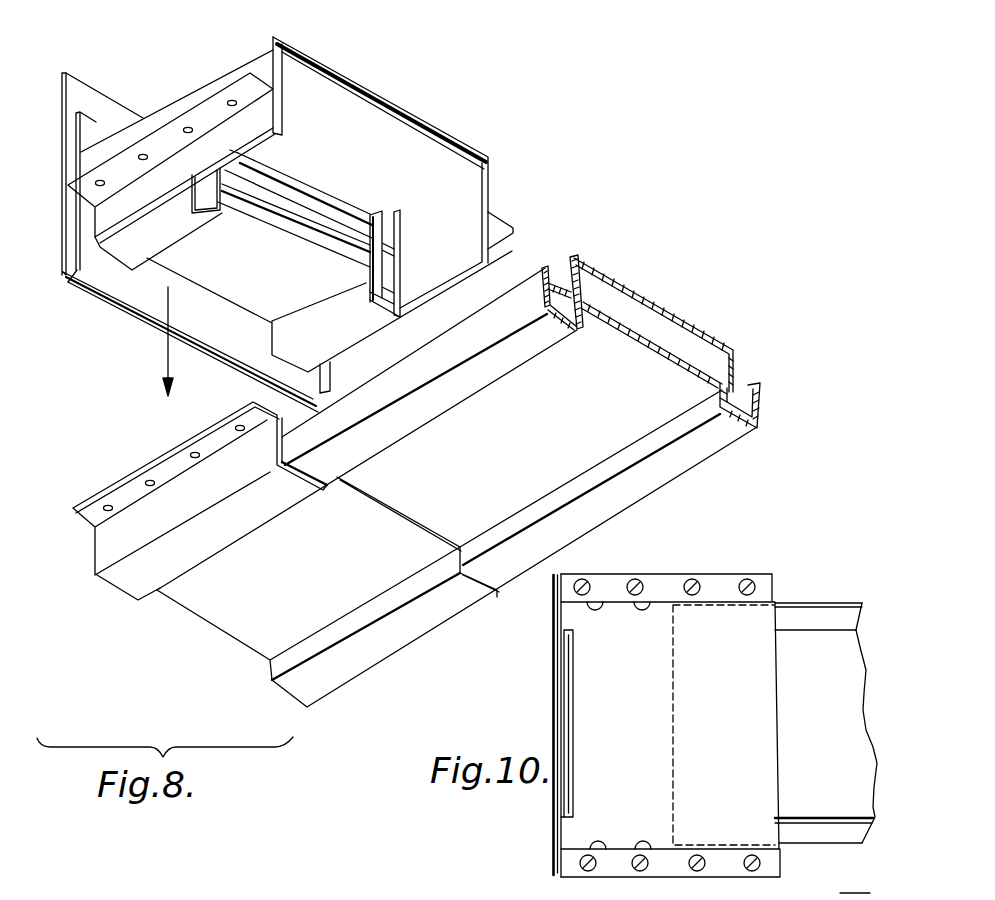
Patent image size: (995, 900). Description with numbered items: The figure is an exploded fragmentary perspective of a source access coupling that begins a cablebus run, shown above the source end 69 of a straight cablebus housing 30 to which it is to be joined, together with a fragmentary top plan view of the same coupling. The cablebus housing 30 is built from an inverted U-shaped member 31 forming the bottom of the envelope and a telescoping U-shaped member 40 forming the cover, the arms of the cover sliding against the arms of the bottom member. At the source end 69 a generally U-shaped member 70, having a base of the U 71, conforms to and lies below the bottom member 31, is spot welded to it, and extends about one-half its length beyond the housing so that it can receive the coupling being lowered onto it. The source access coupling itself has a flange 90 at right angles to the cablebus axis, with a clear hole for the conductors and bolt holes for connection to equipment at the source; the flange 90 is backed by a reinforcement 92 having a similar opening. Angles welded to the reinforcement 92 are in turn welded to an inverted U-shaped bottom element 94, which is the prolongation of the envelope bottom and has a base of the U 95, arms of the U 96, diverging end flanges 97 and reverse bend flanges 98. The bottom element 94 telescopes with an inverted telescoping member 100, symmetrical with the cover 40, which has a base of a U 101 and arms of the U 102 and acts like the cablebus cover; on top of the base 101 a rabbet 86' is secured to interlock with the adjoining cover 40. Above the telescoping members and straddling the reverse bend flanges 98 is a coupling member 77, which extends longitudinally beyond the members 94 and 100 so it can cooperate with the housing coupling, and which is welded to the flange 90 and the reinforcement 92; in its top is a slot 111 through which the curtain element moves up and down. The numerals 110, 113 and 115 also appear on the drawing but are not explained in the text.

In FIG. 8, the cablebus housing 30 is at (612, 267).
In FIG. 10, the cablebus housing 30 is at (818, 596).
In FIG. 8, the inverted U-shaped member 31 is at (617, 393).
In FIG. 8, the U-shaped member 40 is at (650, 300).
In FIG. 10, the U-shaped member 40 is at (826, 723).
In FIG. 8, the source end 69 is at (115, 542).
In FIG. 8, the U-shaped member 70 is at (457, 518).
In FIG. 8, the base of the U 71 is at (418, 537).
In FIG. 8, the coupling member 77 is at (346, 86).
In FIG. 10, the coupling member 77 is at (670, 725).
In FIG. 8, the rabbet 86' is at (323, 171).
In FIG. 8, the flange 90 is at (110, 106).
In FIG. 10, the flange 90 is at (550, 667).
In FIG. 8, the reinforcement 92 is at (75, 116).
In FIG. 10, the reinforcement 92 is at (563, 837).
In FIG. 8, the inverted U-shaped bottom element 94 is at (307, 227).
In FIG. 8, the base of the U 95 is at (270, 210).
In FIG. 8, the arms of the U 96 is at (365, 285).
In FIG. 8, the diverging end flanges 97 is at (140, 240).
In FIG. 8, the reverse bend flanges 98 is at (400, 265).
In FIG. 8, the inverted telescoping member 100 is at (318, 198).
In FIG. 8, the base of a U 101 is at (285, 177).
In FIG. 8, the arms of the U 102 is at (375, 245).
In FIG. 10, the outer strip 110 is at (566, 698).
In FIG. 10, the slot 111 is at (568, 745).
In FIG. 8, the base plate 113 is at (428, 147).
In FIG. 8, the wall end edge 115 is at (270, 57).